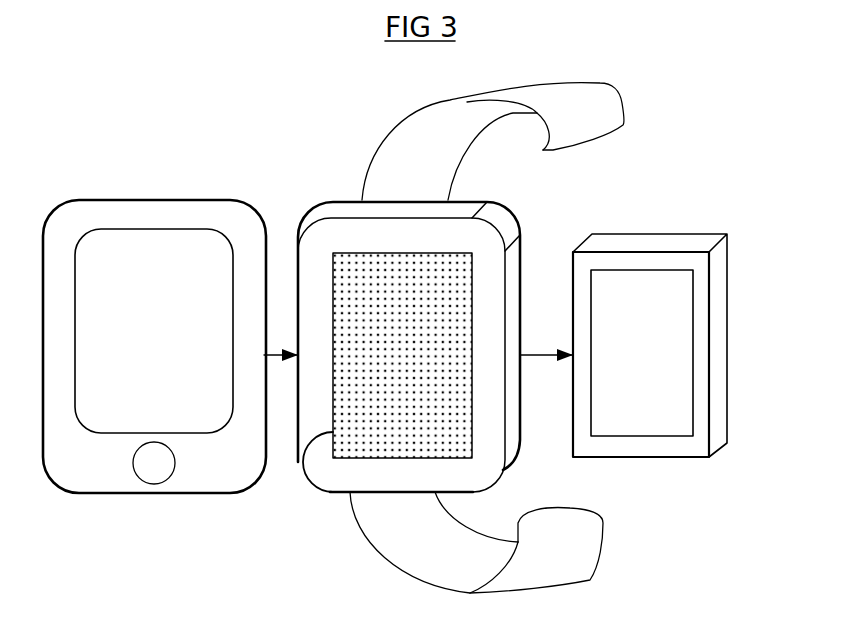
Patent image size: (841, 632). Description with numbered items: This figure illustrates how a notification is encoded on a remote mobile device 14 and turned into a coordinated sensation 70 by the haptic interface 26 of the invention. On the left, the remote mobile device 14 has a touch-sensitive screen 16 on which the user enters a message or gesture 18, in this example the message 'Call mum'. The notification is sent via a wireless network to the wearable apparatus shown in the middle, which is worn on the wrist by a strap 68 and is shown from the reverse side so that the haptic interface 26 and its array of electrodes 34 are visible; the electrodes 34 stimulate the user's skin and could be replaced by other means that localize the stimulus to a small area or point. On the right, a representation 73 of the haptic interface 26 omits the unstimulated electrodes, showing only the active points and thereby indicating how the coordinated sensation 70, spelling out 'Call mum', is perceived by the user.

The remote mobile device 14 is at (96, 494).
The touch-sensitive screen 16 is at (197, 373).
The message or gesture 18 is at (133, 250).
The haptic interface 26 is at (306, 447).
The electrodes 34 is at (347, 260).
The strap 68 is at (418, 152).
The coordinated sensation 70 is at (682, 372).
The representation of the haptic interface excluding unstimulated electrodes 73 is at (660, 232).